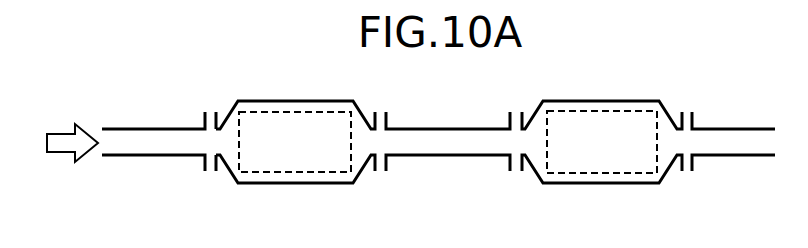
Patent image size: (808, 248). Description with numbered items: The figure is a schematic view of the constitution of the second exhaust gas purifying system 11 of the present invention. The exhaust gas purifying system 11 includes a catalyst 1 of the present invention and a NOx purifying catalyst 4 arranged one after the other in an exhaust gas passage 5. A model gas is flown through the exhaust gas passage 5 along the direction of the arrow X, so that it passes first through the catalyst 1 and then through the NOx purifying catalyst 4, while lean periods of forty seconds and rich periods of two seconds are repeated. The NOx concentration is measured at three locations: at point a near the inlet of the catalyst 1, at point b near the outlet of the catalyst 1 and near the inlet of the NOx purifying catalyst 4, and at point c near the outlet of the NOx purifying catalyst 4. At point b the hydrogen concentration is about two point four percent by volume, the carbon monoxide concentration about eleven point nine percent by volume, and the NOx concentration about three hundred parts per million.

The arrow indicating flow direction X is at (63, 152).
The exhaust gas passage 5 is at (120, 129).
The exhaust gas purifying system 11 is at (221, 92).
The catalyst 1 is at (303, 110).
The NOx purifying catalyst 4 is at (608, 108).
The measuring point near inlet of catalyst a is at (210, 143).
The measuring point between catalysts b is at (447, 142).
The measuring point near outlet of NOx purifying catalyst c is at (688, 143).